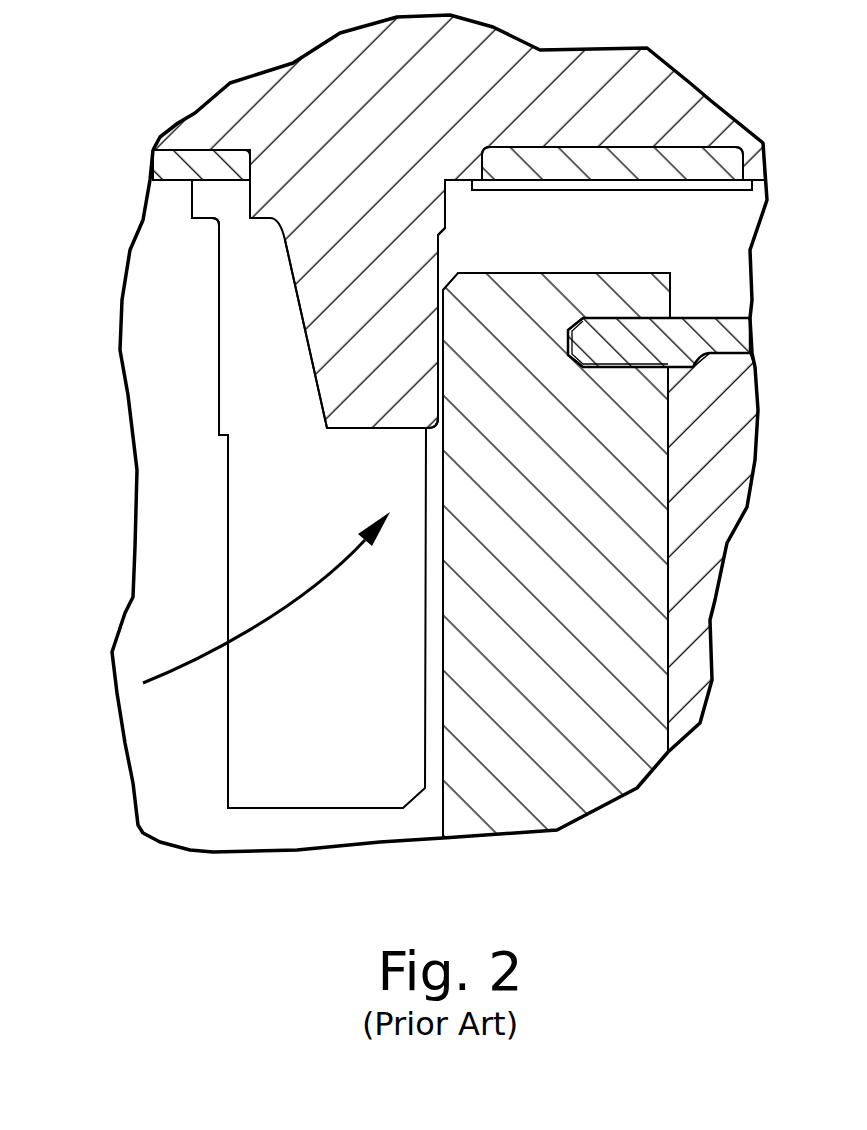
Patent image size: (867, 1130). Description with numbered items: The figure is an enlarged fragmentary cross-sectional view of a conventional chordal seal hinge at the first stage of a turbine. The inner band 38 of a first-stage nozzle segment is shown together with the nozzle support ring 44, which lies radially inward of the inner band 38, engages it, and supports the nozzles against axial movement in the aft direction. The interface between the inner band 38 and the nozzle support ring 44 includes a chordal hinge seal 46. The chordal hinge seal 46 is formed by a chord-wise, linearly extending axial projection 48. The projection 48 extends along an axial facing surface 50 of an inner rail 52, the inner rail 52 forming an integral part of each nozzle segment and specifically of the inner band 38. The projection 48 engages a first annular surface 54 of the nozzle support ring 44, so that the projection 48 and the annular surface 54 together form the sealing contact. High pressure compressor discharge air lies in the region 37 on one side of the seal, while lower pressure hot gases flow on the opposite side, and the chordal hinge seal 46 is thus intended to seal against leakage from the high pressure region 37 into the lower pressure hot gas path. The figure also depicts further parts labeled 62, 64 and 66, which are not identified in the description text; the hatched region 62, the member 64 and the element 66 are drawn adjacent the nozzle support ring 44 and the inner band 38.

The high pressure region 37 is at (167, 593).
The inner band 38 is at (280, 108).
The nozzle support ring 44 is at (588, 795).
The chordal hinge seal 46 is at (155, 337).
The axial projection 48 is at (440, 398).
The axial facing surface 50 is at (438, 268).
The inner rail 52 is at (320, 242).
The first annular surface 54 is at (440, 587).
The space 62 is at (600, 244).
The bar 64 is at (660, 272).
The seal ring 66 is at (672, 185).